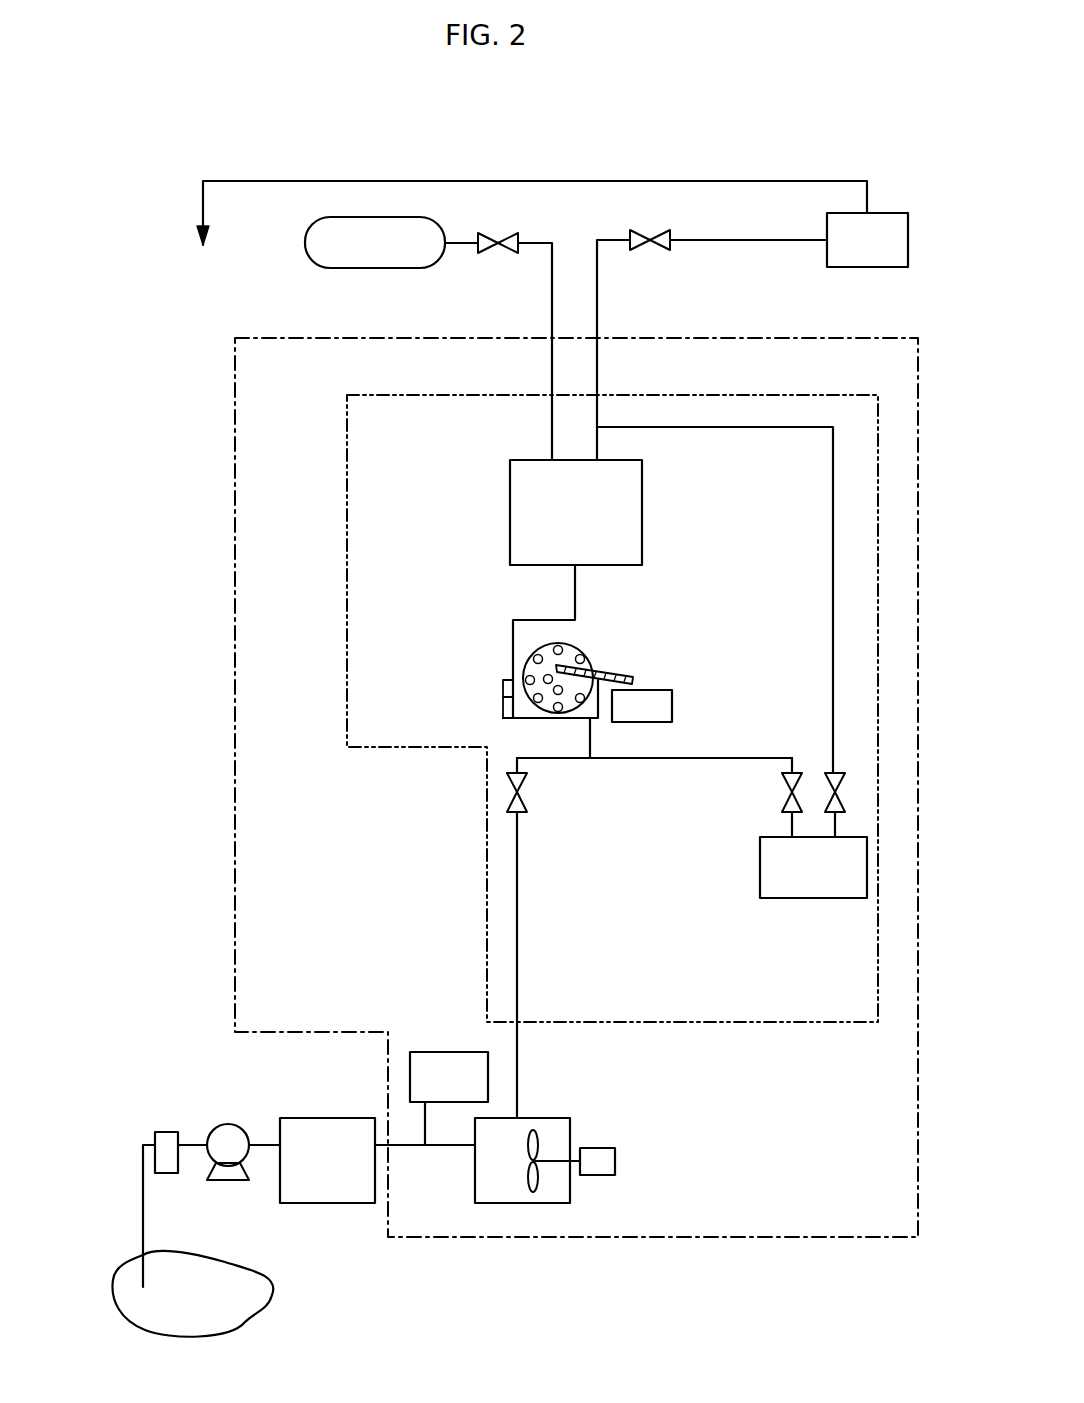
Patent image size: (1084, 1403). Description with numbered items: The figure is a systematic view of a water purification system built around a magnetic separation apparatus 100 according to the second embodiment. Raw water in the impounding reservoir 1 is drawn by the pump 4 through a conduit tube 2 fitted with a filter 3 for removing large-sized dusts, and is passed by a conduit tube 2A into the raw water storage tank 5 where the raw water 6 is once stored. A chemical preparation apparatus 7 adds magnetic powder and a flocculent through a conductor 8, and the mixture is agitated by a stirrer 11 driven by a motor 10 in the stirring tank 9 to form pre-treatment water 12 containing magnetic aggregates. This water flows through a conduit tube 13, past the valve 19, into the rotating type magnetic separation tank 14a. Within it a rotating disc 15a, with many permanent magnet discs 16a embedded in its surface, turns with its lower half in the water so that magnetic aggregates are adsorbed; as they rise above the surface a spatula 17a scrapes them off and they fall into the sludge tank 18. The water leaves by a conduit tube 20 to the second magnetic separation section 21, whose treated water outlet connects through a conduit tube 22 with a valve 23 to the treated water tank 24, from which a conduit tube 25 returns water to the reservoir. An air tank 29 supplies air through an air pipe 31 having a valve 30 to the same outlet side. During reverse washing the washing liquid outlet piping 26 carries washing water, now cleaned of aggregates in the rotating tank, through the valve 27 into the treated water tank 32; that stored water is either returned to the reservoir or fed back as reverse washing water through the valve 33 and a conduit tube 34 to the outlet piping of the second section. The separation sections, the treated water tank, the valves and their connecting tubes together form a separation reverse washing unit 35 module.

The impounding reservoir 1 is at (275, 1290).
The conduit tube 2 is at (143, 1218).
The conduit tube 2A is at (262, 1145).
The filter 3 is at (165, 1132).
The pump 4 is at (220, 1125).
The raw water storage tank 5 is at (335, 1203).
The raw water 6 is at (315, 1125).
The chemical preparation apparatus 7 is at (435, 1052).
The conductor 8 is at (418, 1145).
The stirring tank 9 is at (522, 1203).
The motor 10 is at (615, 1161).
The stirrer 11 is at (540, 1140).
The pre-treatment water 12 is at (555, 1193).
The conduit tube 13 is at (517, 877).
The rotating type magnetic separation tank 14a is at (503, 700).
The rotating disc 15a is at (578, 655).
The permanent magnet disc 16a is at (535, 660).
The spatula 17a is at (610, 675).
The sludge tank 18 is at (672, 705).
The valve 19 is at (527, 795).
The conduit tube 20 is at (575, 590).
The second magnetic separation section 21 is at (642, 488).
The conduit tube 22 is at (742, 240).
The valve 23 is at (655, 238).
The treated water tank 24 is at (870, 267).
The conduit tube 25 is at (378, 181).
The washing liquid outlet piping 26 is at (635, 758).
The valve 27 is at (782, 797).
The air tank 29 is at (305, 241).
The valve 30 is at (518, 237).
The air pipe 31 is at (552, 325).
The treated water tank 32 is at (832, 898).
The valve 33 is at (822, 778).
The conduit tube 34 is at (833, 583).
The separation reverse washing unit 35 is at (347, 548).
The magnetic separation apparatus 100 is at (212, 598).